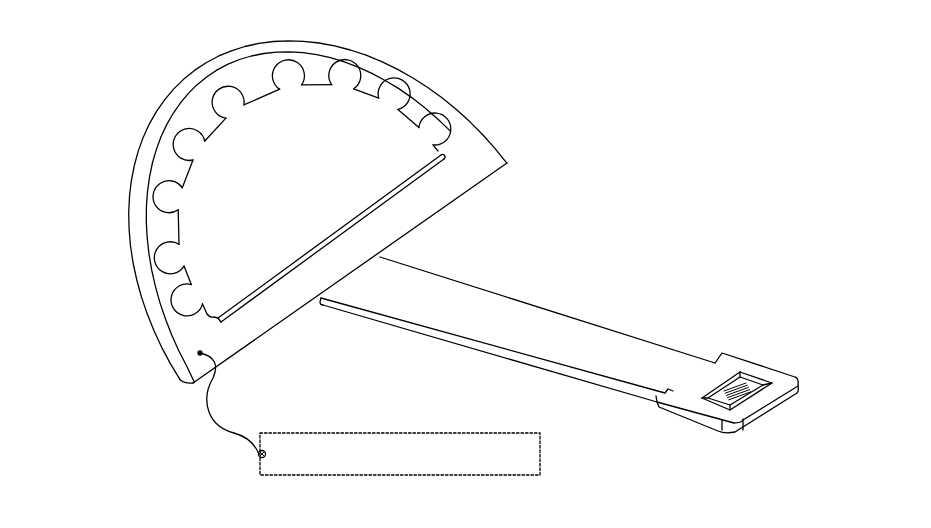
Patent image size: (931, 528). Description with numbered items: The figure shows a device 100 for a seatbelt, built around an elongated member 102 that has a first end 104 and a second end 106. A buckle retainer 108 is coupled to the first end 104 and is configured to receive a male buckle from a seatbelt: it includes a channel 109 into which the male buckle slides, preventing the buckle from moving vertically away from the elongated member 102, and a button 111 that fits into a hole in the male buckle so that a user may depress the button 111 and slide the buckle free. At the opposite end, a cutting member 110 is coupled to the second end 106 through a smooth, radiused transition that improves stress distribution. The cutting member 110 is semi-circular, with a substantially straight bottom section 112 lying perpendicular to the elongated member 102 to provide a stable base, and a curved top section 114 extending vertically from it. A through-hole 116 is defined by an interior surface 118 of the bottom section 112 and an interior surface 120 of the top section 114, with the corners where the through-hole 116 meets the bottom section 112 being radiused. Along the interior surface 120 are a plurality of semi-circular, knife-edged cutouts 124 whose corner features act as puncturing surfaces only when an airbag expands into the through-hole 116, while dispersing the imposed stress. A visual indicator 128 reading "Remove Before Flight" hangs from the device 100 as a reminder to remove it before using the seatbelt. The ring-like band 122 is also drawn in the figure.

The device 100 is at (148, 62).
The elongated member 102 is at (530, 330).
The first end 104 is at (714, 353).
The second end 106 is at (370, 264).
The buckle retainer 108 is at (778, 402).
The channel 109 is at (762, 365).
The cutting member 110 is at (157, 357).
The button 111 is at (723, 402).
The bottom section 112 is at (255, 323).
The top section 114 is at (447, 120).
The through-hole 116 is at (258, 257).
The interior surface of the bottom section 118 is at (333, 238).
The interior surface of the top section 120 is at (295, 78).
The ring 122 is at (423, 82).
The cutouts 124 is at (203, 100).
The visual indicator 128 is at (377, 432).